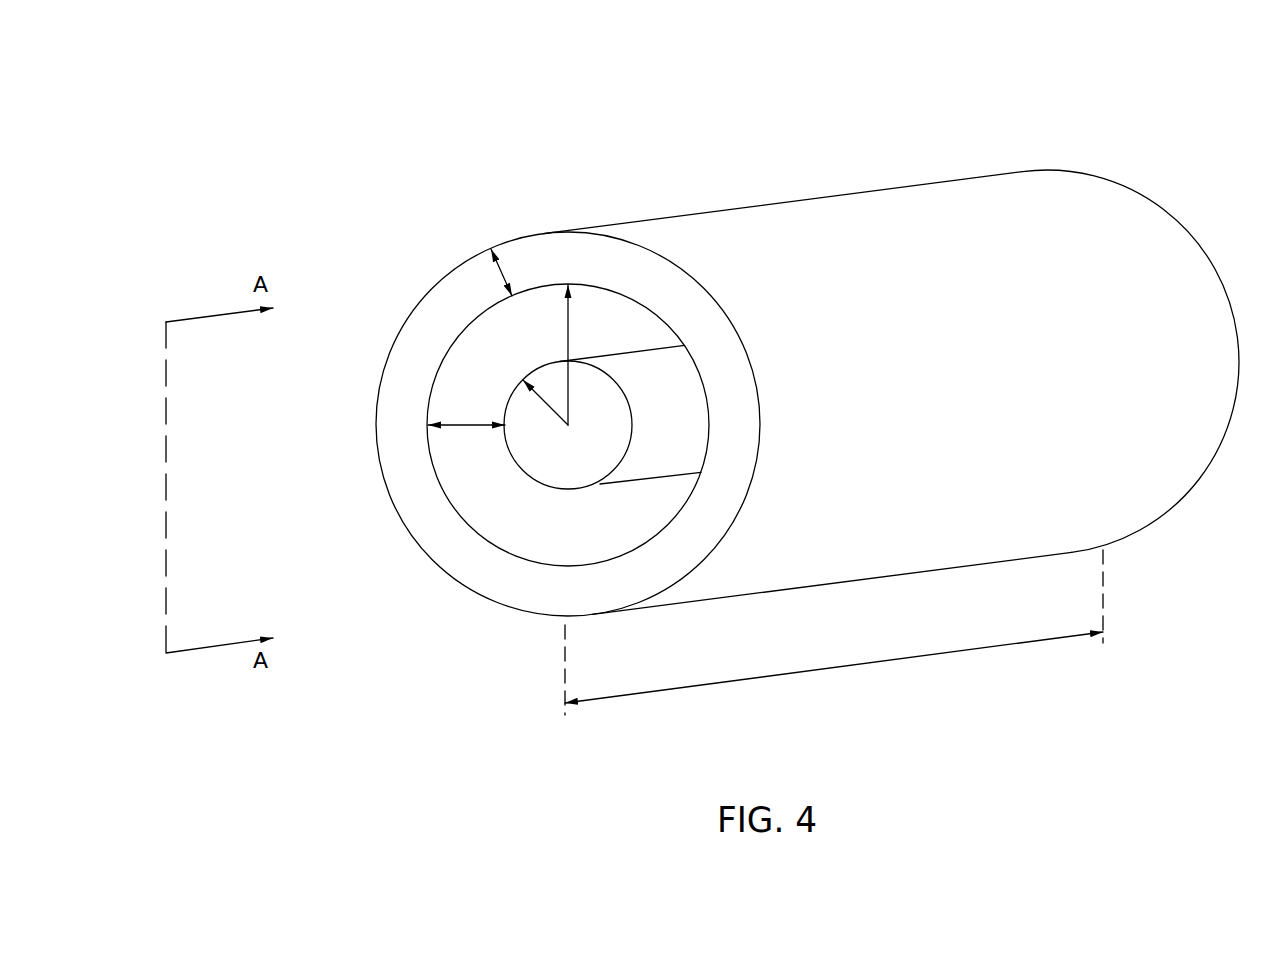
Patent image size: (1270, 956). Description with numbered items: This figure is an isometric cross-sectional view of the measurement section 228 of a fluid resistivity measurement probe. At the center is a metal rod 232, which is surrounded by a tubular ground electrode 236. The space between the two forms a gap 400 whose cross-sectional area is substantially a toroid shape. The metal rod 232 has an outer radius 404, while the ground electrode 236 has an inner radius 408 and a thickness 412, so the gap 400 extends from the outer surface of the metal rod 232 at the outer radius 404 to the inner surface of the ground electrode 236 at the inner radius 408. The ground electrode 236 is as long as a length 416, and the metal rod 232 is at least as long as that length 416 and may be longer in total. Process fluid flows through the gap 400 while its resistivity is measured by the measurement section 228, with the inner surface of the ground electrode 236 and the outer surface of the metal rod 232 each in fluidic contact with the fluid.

The measurement section 228 is at (990, 90).
The metal rod 232 is at (604, 461).
The ground electrode 236 is at (756, 423).
The gap 400 is at (467, 426).
The outer radius 404 is at (510, 411).
The inner radius 408 is at (567, 334).
The thickness 412 is at (508, 277).
The length 416 is at (843, 667).